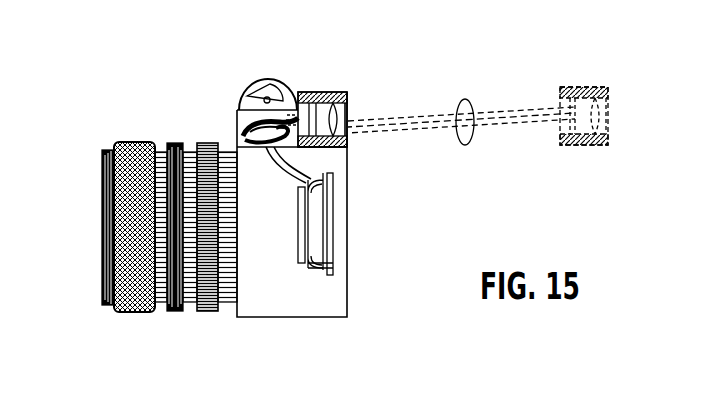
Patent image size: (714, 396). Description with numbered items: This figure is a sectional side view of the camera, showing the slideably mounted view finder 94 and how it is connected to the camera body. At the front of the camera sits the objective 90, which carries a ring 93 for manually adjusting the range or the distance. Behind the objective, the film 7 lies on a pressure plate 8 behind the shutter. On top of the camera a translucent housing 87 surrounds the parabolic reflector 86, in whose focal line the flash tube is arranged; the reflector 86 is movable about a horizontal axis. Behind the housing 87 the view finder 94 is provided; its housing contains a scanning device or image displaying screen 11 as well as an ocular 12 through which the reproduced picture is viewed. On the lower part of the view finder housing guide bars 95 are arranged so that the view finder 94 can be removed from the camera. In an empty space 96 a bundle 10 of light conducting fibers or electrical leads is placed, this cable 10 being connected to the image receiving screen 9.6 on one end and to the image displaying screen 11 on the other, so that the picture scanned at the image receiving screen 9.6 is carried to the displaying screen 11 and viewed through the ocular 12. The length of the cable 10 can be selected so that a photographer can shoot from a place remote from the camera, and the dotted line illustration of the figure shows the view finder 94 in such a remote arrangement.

The film 7 is at (326, 205).
The pressure plate 8 is at (333, 239).
The image receiving screen 9.6 is at (302, 226).
The bundle of light conducting fibers or electrical leads 10 is at (464, 99).
The image displaying screen 11 is at (309, 92).
The ocular 12 is at (338, 106).
The parabolic reflector 86 is at (247, 97).
The translucent housing 87 is at (266, 78).
The objective 90 is at (103, 291).
The ring 93 is at (145, 312).
The view finder 94 is at (331, 93).
The guide bars 95 is at (336, 148).
The empty space 96 is at (246, 112).